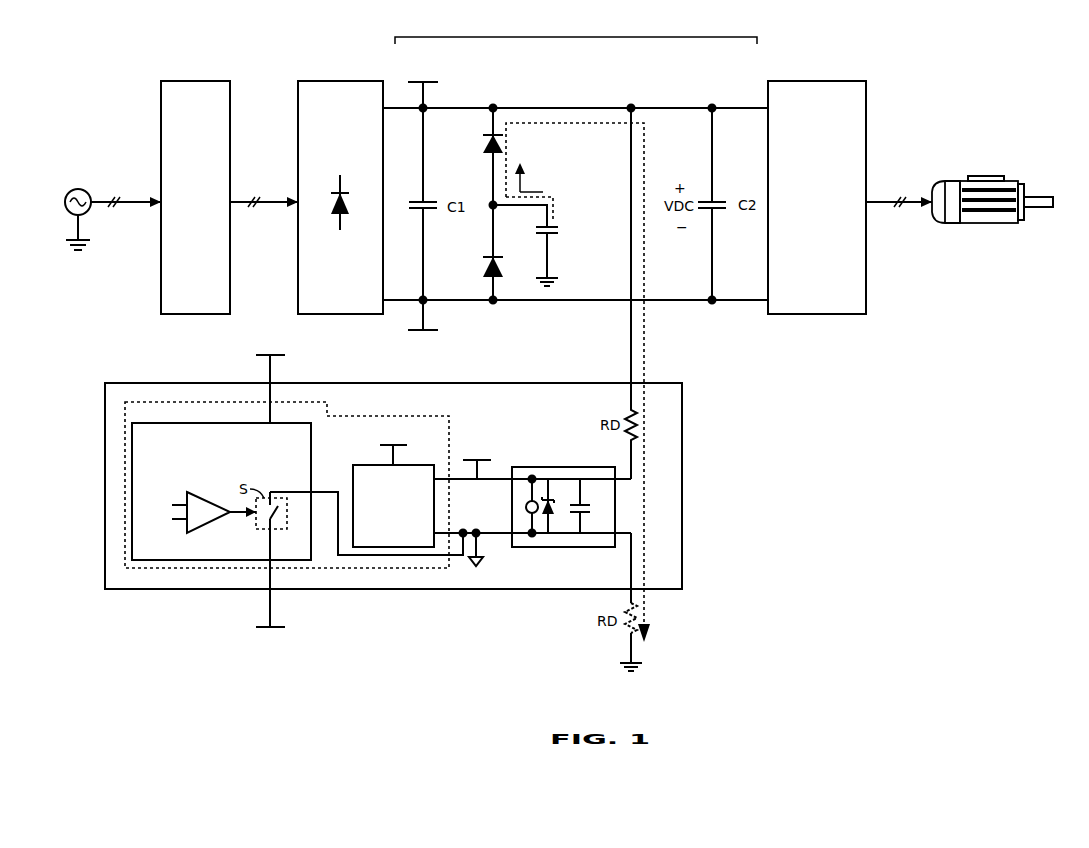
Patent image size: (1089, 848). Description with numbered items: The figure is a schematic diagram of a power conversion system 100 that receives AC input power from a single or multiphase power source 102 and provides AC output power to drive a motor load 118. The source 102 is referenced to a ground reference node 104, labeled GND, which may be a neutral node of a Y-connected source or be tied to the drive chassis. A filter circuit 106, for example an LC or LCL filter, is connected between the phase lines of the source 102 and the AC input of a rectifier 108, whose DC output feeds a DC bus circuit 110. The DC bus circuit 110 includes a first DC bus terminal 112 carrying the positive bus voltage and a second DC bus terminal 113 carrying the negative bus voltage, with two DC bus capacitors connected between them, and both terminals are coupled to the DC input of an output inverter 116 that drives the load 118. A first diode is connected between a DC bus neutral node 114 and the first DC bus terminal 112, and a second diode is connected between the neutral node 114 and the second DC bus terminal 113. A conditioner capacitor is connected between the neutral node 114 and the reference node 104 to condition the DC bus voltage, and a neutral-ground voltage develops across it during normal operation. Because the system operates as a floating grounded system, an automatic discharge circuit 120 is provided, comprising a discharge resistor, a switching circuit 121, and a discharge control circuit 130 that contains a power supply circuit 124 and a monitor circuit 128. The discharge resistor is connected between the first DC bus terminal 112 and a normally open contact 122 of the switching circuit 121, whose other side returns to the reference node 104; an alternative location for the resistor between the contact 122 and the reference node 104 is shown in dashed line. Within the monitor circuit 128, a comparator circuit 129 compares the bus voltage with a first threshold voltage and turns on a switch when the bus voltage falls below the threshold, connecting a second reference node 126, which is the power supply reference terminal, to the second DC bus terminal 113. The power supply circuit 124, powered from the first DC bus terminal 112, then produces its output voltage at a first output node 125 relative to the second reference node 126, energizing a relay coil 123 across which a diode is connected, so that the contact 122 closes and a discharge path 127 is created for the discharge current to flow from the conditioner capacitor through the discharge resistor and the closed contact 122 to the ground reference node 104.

The power conversion system 100 is at (106, 39).
The power source 102 is at (77, 190).
The reference node 104 is at (83, 236).
The filter circuit 106 is at (191, 78).
The rectifier 108 is at (331, 78).
The DC bus circuit 110 is at (575, 38).
The first DC bus terminal 112 is at (425, 95).
The second DC bus terminal 113 is at (425, 315).
The DC bus neutral node 114 is at (490, 202).
The output inverter 116 is at (808, 78).
The motor load 118 is at (949, 179).
The automatic discharge circuit 120 is at (450, 383).
The switching circuit 121 is at (561, 467).
The normally open contact 122 is at (627, 520).
The relay coil 123 is at (522, 507).
The power supply circuit 124 is at (364, 465).
The first output node 125 is at (481, 471).
The second reference node 126 is at (483, 549).
The discharge path 127 is at (644, 491).
The monitor circuit 128 is at (182, 423).
The comparator circuit 129 is at (195, 492).
The discharge control circuit 130 is at (133, 402).